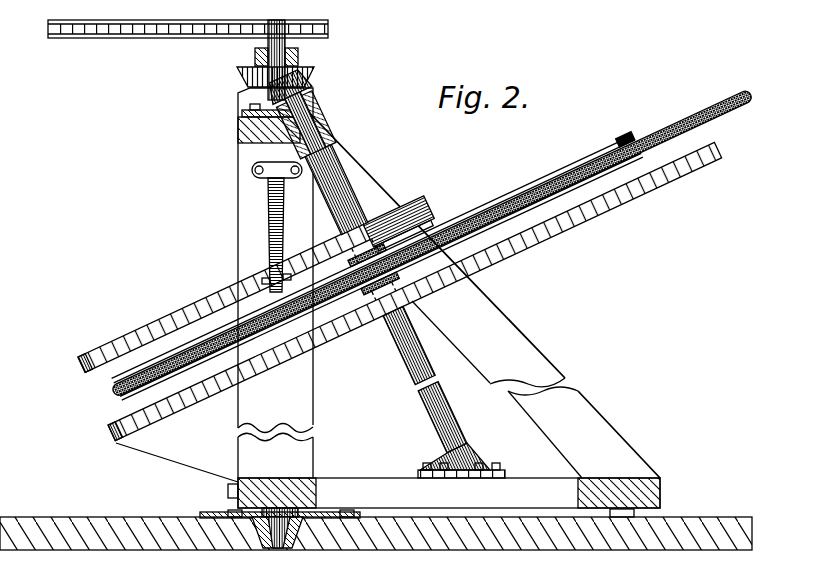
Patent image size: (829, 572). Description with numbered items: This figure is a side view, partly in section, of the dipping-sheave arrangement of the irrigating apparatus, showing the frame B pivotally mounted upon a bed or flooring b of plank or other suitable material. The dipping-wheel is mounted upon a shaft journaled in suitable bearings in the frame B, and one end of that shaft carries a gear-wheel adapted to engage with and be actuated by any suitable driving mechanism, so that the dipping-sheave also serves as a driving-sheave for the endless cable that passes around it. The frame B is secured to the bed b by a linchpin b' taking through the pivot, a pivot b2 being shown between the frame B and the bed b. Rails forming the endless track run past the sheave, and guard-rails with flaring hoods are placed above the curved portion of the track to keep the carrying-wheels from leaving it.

The frame B is at (247, 232).
The bed or flooring b is at (376, 529).
The linchpin b' is at (290, 544).
The pivot b2 is at (266, 553).